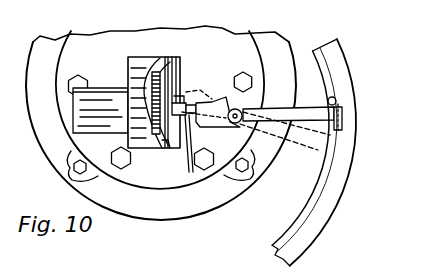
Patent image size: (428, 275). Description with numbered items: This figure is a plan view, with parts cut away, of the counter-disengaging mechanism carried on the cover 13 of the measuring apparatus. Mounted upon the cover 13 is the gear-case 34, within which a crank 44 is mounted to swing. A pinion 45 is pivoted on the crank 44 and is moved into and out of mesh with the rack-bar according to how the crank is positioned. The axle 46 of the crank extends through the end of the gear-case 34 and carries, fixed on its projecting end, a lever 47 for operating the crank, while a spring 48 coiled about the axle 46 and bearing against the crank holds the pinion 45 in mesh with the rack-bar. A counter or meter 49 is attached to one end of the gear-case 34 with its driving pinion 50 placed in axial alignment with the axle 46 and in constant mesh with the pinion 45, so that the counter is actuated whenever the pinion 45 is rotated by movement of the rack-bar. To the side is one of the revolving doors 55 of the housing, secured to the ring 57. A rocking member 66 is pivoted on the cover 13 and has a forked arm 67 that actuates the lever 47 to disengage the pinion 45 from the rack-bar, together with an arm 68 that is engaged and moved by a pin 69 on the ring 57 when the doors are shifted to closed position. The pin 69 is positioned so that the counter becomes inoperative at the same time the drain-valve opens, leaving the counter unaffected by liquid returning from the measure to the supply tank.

The cover 13 is at (206, 209).
The gear-case 34 is at (138, 57).
The crank 44 is at (180, 80).
The pinion 45 is at (178, 72).
The axle 46 is at (172, 124).
The lever 47 is at (188, 170).
The spring 48 is at (184, 97).
The counter or meter 49 is at (107, 88).
The driving pinion 50 is at (157, 150).
The revolving door 55 is at (345, 189).
The ring 57 is at (323, 181).
The rocking member 66 is at (243, 109).
The forked arm 67 is at (204, 121).
The arm 68 is at (303, 109).
The pin 69 is at (337, 100).